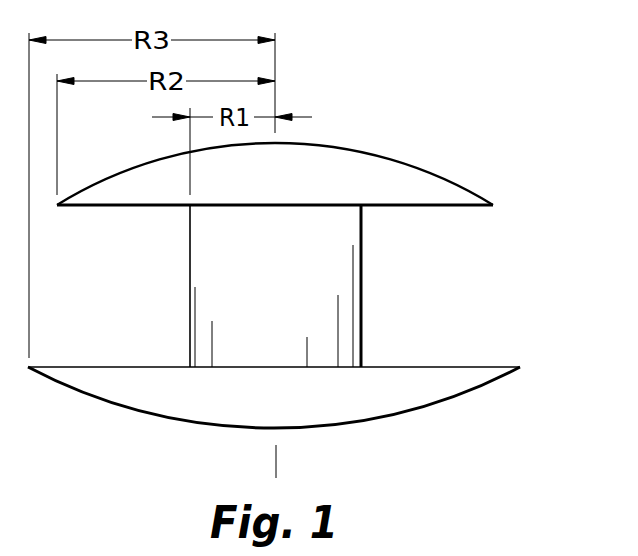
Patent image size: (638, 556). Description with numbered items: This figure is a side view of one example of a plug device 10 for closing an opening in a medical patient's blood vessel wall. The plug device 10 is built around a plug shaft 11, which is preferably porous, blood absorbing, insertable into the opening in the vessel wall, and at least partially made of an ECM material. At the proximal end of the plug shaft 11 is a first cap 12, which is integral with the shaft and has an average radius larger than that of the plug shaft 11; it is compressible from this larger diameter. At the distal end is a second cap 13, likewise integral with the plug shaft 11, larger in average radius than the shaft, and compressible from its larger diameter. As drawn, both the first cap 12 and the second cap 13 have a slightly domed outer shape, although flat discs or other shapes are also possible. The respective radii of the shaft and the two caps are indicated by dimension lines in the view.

The plug device 10 is at (485, 117).
The plug shaft 11 is at (335, 293).
The first cap 12 is at (415, 393).
The second cap 13 is at (442, 186).